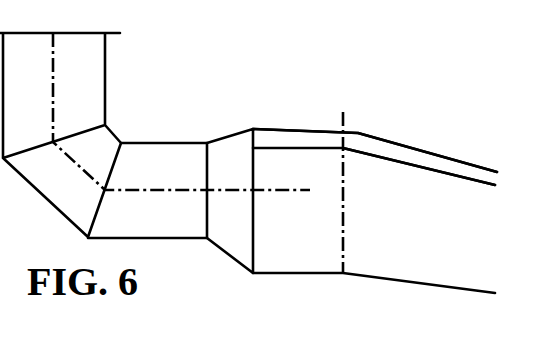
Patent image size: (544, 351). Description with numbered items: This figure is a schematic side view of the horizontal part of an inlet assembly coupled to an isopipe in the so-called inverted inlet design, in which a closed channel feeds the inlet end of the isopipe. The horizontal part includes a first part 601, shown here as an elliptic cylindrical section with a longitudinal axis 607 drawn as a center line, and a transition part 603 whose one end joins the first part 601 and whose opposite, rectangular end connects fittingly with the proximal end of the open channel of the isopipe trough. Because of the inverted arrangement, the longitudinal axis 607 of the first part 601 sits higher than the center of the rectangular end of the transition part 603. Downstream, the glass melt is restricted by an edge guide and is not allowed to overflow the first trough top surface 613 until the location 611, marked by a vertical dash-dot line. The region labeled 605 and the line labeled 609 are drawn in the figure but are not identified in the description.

The first part 601 is at (147, 190).
The transition part 603 is at (230, 201).
The nozzle section 605 is at (375, 211).
The longitudinal axis 607 is at (199, 187).
The upper nozzle wall 609 is at (304, 131).
The location 611 is at (349, 121).
The first trough top surface 613 is at (417, 170).